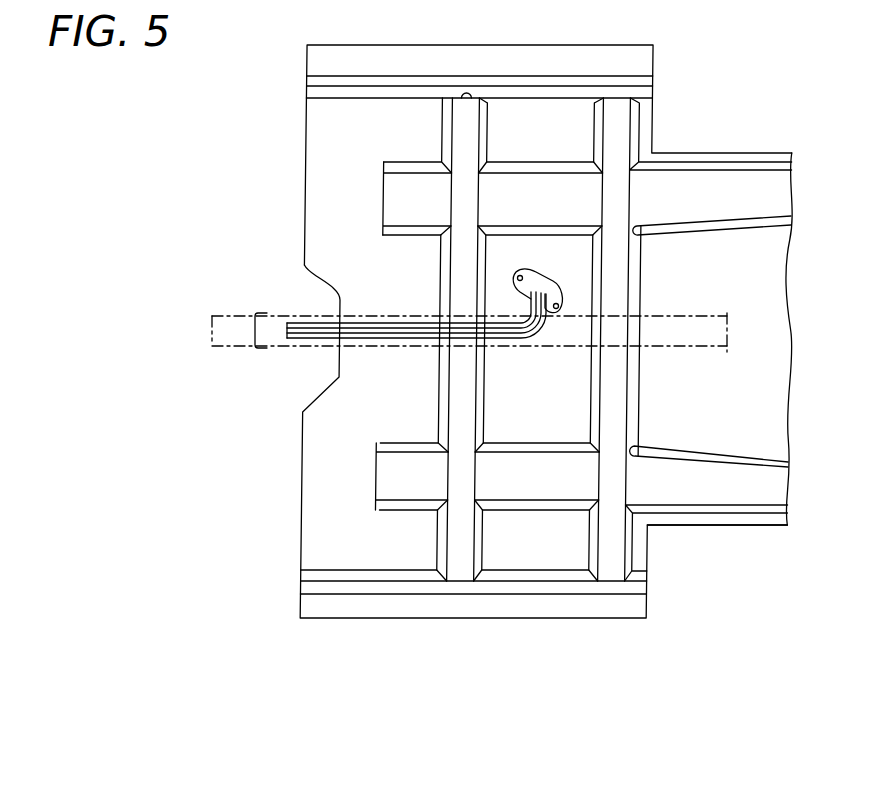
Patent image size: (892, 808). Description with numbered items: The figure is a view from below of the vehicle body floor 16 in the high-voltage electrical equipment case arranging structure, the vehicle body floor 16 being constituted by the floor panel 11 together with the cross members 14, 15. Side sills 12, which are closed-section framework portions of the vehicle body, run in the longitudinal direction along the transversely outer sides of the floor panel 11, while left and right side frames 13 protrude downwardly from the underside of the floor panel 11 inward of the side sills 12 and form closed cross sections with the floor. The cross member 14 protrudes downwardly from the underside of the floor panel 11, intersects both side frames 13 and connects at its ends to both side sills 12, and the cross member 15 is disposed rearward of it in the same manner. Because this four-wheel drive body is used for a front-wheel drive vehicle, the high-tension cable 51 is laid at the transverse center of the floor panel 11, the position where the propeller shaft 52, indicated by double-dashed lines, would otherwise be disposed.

The floor panel 11 is at (386, 112).
The side sill 12 is at (304, 68).
The side frame 13 is at (539, 162).
The cross member 14 is at (440, 248).
The cross member 15 is at (638, 394).
The vehicle body floor 16 is at (664, 98).
The high-tension cable 51 is at (382, 317).
The propeller shaft 52 is at (683, 318).